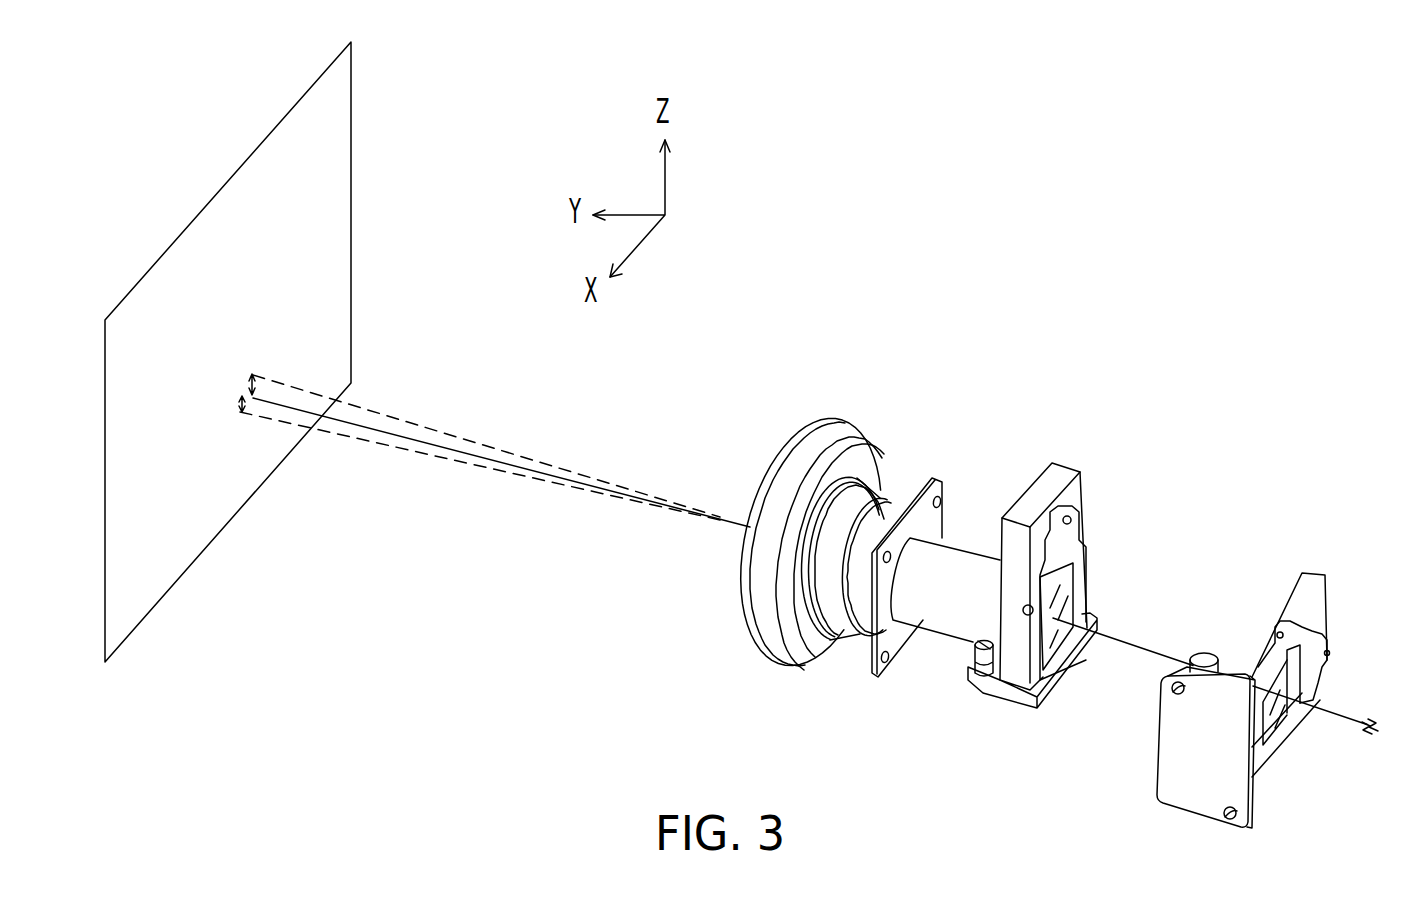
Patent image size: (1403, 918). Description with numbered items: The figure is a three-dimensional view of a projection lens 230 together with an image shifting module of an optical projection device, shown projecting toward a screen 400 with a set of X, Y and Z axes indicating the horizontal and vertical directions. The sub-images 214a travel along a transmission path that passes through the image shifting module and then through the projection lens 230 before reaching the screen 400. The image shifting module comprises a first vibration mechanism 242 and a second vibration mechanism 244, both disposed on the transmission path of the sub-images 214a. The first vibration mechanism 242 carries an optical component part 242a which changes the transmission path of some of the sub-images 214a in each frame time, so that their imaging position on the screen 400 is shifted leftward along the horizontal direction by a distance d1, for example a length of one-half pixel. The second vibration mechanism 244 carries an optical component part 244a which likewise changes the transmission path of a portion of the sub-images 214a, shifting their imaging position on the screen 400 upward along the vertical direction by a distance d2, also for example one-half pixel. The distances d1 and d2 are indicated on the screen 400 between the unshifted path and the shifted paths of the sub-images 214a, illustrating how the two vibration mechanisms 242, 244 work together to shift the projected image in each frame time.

The screen 400 is at (335, 163).
The distance d1 is at (242, 403).
The distance d2 is at (250, 388).
The projection lens 230 is at (833, 432).
The second vibration mechanism 244 is at (1043, 490).
The optical component part 244a is at (1065, 620).
The sub-images 214a is at (1155, 647).
The first vibration mechanism 242 is at (1312, 577).
The optical component part 242a is at (1273, 717).